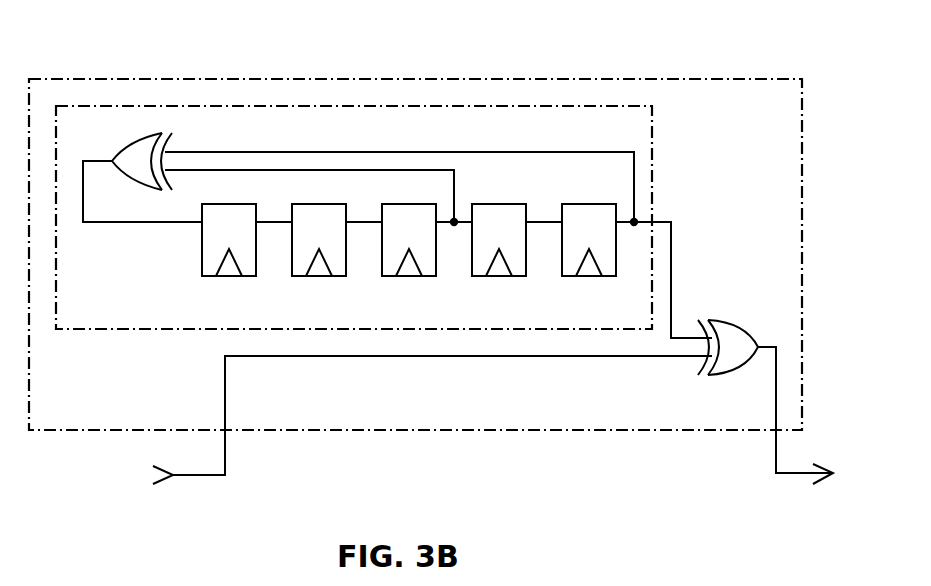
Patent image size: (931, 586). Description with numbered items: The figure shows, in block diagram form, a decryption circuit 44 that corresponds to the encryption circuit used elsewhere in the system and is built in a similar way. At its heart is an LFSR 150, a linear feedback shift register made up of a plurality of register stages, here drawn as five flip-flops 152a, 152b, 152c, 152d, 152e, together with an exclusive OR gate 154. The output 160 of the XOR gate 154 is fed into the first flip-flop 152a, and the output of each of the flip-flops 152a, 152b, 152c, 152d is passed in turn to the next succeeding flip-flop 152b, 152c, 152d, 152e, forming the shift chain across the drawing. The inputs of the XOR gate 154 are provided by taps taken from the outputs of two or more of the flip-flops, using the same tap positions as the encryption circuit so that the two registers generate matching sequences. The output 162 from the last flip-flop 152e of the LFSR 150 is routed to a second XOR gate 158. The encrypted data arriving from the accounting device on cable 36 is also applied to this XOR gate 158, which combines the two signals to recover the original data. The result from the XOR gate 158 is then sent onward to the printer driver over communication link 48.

The decryption circuit 44 is at (477, 76).
The LFSR 150 is at (657, 168).
The exclusive OR (XOR) gate 154 is at (132, 147).
The output of XOR gate 160 is at (163, 227).
The flip-flop 152a is at (198, 260).
The flip-flop 152b is at (288, 260).
The flip-flop 152c is at (378, 260).
The flip-flop 152d is at (468, 260).
The flip-flop 152e is at (558, 260).
The output from the last flip-flop 162 is at (675, 272).
The XOR gate 158 is at (720, 320).
The communication link 48 is at (777, 388).
The cable 36 is at (225, 408).